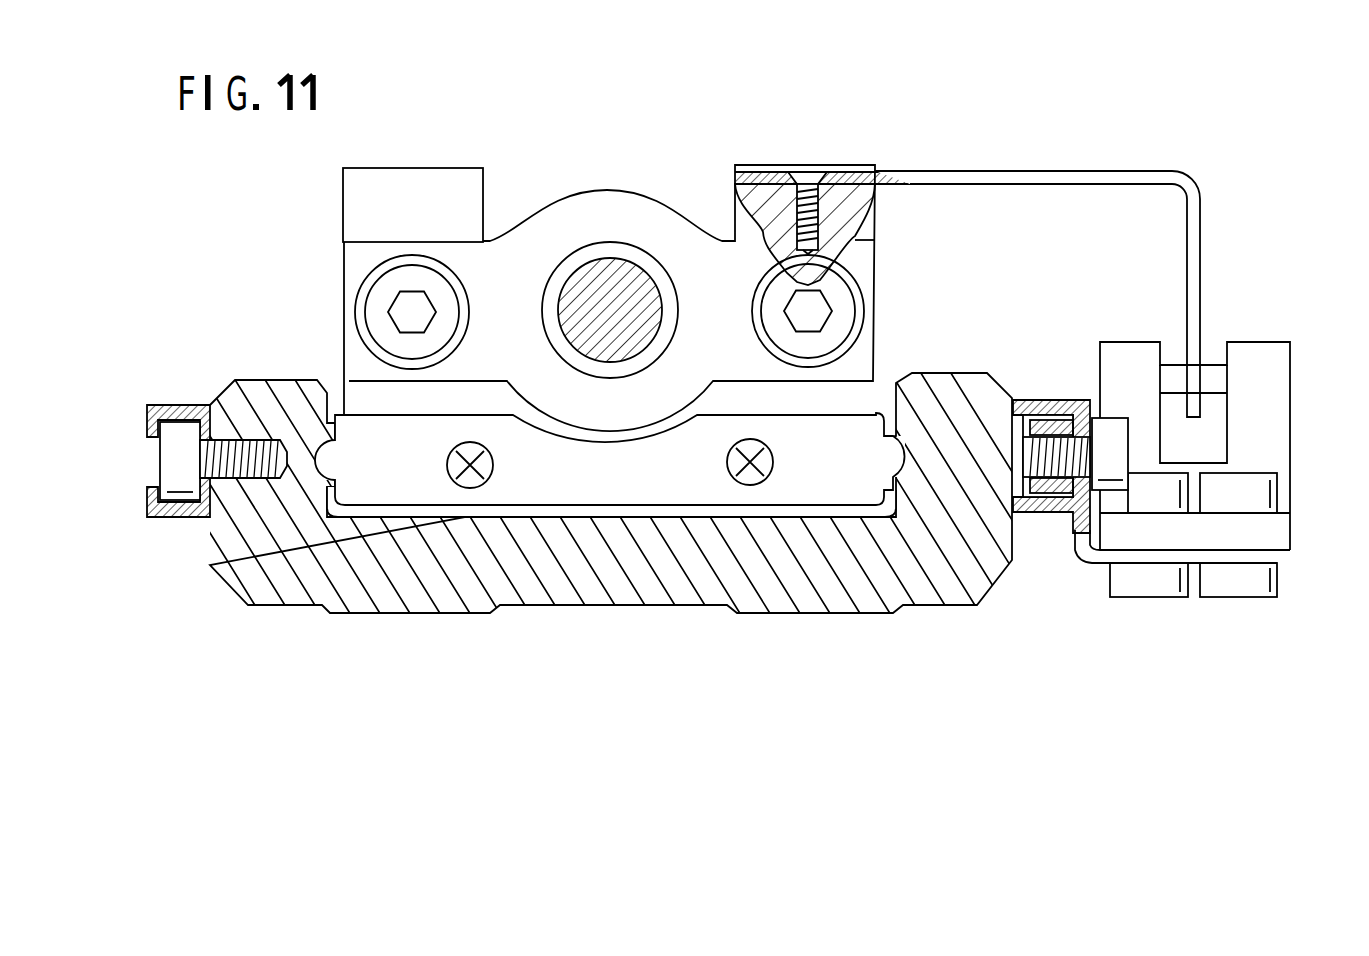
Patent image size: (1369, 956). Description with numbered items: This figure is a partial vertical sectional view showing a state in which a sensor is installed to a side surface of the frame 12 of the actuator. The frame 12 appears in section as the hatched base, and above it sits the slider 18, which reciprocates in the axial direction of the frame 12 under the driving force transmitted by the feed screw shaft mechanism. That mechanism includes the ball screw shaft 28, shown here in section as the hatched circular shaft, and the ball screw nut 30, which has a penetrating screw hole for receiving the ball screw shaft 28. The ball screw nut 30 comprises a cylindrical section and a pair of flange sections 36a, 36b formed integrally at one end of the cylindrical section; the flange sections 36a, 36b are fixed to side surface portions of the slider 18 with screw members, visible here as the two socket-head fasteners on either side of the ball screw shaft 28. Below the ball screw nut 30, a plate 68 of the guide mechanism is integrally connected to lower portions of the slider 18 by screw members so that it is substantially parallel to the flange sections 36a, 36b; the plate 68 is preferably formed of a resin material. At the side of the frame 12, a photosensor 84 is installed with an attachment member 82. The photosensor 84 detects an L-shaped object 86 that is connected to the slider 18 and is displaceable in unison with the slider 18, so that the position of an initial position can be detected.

The frame 12 is at (208, 548).
The slider 18 is at (408, 213).
The ball screw shaft 28 is at (608, 300).
The ball screw nut 30 is at (552, 226).
The flange section 36a is at (350, 316).
The flange section 36b is at (872, 308).
The plate 68 is at (638, 475).
The attachment member 82 is at (165, 398).
The photosensor 84 is at (1293, 400).
The L-shaped object 86 is at (972, 172).